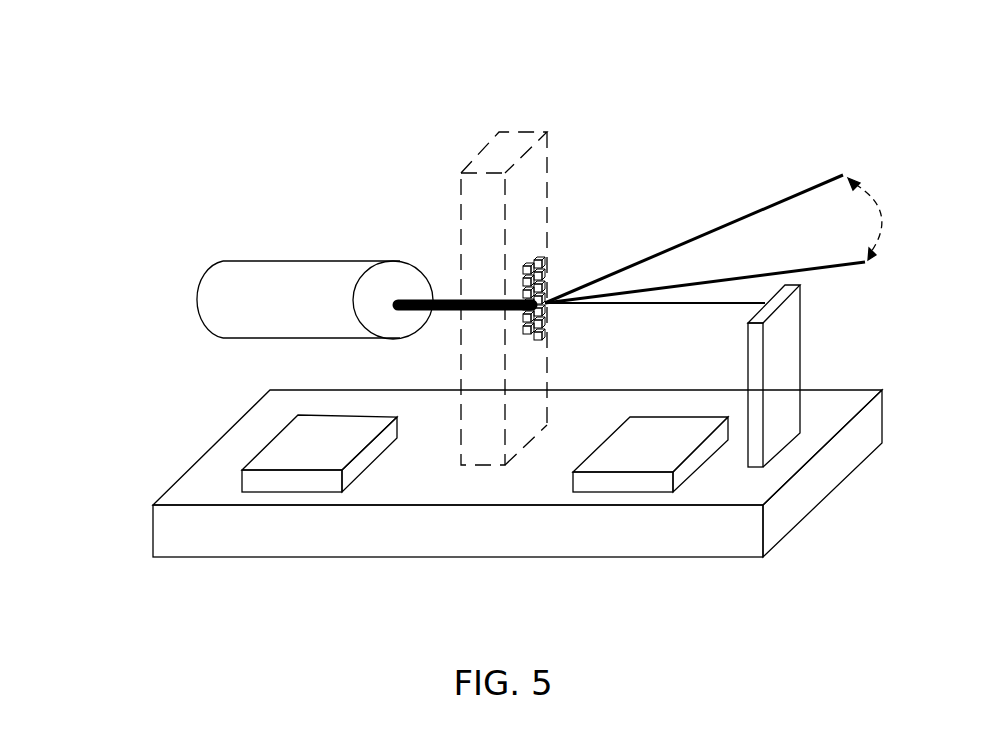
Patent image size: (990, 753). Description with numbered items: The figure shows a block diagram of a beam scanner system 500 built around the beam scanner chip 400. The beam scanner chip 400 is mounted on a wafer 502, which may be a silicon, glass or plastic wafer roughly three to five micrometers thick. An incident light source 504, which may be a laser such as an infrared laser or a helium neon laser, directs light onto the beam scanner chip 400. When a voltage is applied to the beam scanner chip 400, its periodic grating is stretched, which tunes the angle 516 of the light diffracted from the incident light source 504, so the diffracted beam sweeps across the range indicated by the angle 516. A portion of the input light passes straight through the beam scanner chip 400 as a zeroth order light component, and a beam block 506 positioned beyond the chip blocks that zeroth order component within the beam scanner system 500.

The beam scanner system 500 is at (557, 288).
The wafer 502 is at (513, 130).
The incident light source 504 is at (312, 260).
The beam scanner chip 400 is at (547, 270).
The beam block 506 is at (800, 343).
The angle 516 is at (880, 213).